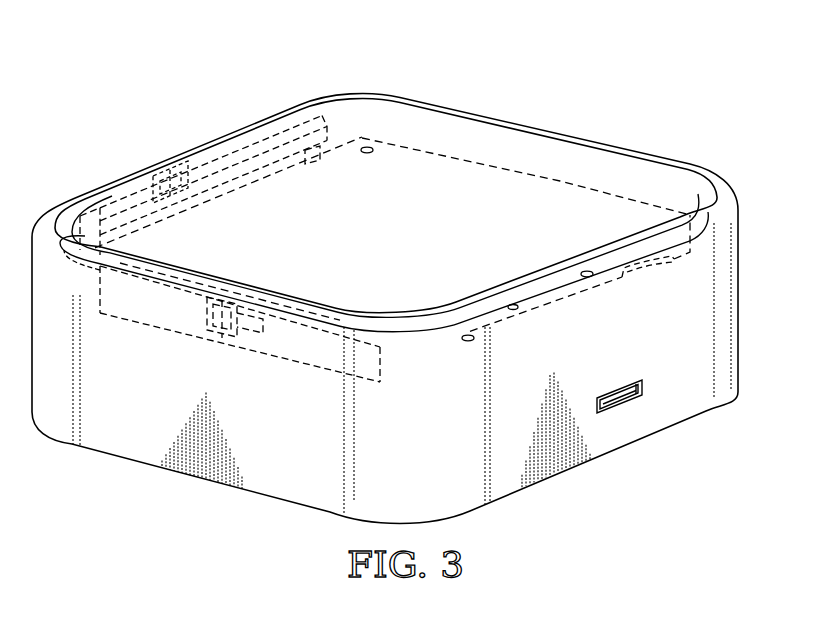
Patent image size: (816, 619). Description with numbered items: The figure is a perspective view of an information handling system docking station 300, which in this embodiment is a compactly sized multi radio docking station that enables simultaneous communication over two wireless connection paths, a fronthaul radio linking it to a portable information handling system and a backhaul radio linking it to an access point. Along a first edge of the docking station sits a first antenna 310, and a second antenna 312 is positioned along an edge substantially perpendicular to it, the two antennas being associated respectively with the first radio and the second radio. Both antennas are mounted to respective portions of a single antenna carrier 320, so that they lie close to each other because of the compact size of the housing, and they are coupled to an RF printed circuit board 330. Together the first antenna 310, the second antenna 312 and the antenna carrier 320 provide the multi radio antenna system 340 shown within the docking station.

The information handling system docking station 300 is at (143, 68).
The first antenna 310 is at (206, 316).
The second antenna 312 is at (149, 190).
The antenna carrier 320 is at (472, 180).
The RF printed circuit board 330 is at (247, 143).
The multi radio antenna system 340 is at (536, 210).